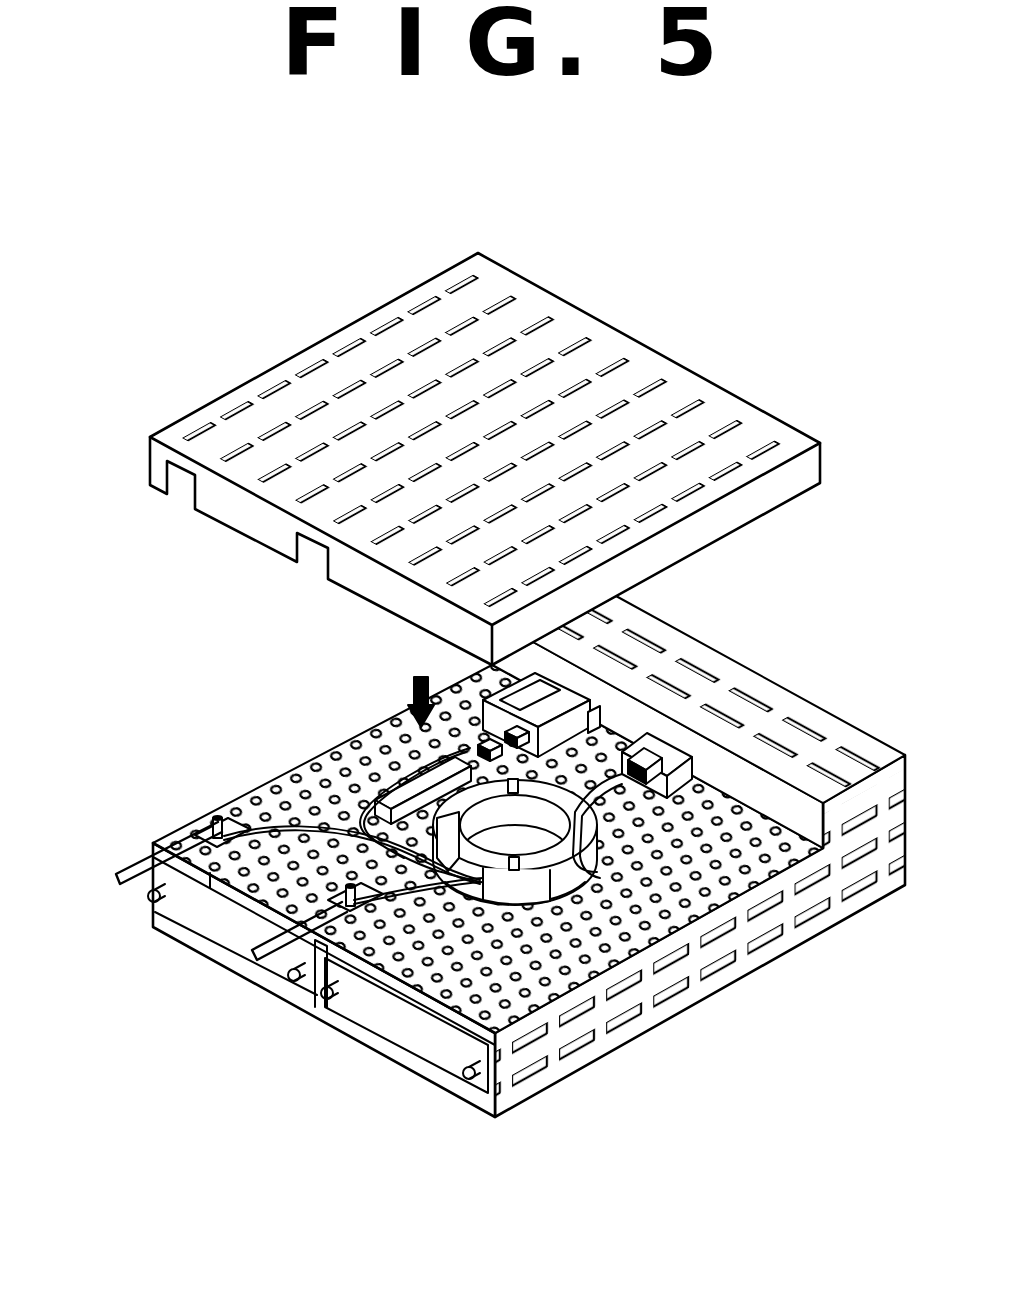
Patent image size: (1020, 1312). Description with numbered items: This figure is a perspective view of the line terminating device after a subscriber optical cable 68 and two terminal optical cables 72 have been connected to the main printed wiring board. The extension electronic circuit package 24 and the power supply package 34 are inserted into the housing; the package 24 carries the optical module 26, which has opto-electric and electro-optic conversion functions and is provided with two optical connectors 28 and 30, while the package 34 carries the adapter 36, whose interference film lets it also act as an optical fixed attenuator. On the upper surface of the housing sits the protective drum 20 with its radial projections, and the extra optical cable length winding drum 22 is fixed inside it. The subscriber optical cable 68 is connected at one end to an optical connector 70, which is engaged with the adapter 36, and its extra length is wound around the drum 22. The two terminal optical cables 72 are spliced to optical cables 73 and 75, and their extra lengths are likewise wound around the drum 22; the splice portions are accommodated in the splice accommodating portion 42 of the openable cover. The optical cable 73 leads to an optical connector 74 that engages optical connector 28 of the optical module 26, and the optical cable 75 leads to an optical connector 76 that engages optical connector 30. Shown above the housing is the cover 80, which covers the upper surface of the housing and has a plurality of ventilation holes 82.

The protective drum 20 is at (590, 876).
The extra optical cable length winding drum 22 is at (533, 857).
The extension electronic circuit package 24 is at (203, 920).
The optical module 26 is at (590, 696).
The optical connector 28 is at (592, 722).
The optical connector 30 is at (537, 672).
The power supply package 34 is at (442, 1053).
The adapter 36 is at (665, 740).
The splice accommodating portion 42 is at (300, 800).
The subscriber optical cable 68 is at (353, 1003).
The optical connector 70 is at (600, 778).
The terminal optical cables 72 is at (275, 888).
The optical cable 73 is at (395, 770).
The optical connector 74 is at (445, 698).
The optical cable 75 is at (476, 745).
The optical connector 76 is at (503, 730).
The cover 80 is at (485, 433).
The ventilation holes 82 is at (566, 340).